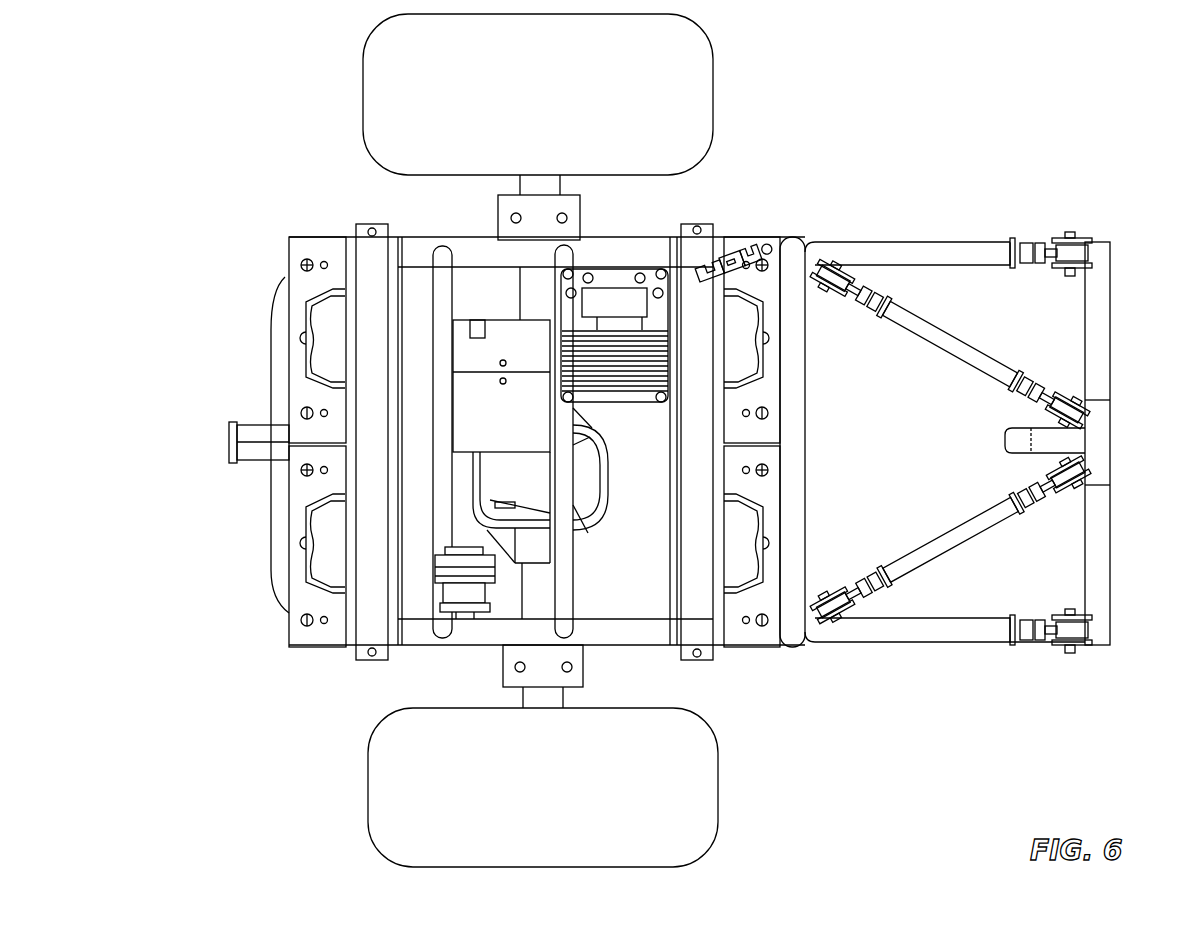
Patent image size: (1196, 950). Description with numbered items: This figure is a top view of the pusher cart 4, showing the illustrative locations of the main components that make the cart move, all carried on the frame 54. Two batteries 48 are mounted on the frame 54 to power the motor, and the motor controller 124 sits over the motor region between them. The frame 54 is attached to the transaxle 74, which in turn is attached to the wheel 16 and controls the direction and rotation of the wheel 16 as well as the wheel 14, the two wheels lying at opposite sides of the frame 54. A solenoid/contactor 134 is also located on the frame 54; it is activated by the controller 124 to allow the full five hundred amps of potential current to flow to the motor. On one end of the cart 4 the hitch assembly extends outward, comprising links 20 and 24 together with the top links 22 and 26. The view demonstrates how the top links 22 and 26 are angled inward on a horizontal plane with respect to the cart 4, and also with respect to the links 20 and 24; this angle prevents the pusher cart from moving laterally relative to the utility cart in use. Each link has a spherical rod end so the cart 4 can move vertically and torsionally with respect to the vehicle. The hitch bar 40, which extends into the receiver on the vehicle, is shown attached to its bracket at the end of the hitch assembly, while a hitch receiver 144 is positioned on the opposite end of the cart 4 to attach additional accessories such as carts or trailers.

The cart 4 is at (238, 136).
The wheel 14 is at (700, 790).
The wheel 16 is at (700, 95).
The link 20 is at (935, 645).
The top link 22 is at (960, 550).
The link 24 is at (945, 242).
The top link 26 is at (963, 336).
The hitch bar 40 is at (1070, 438).
The batteries 48 is at (297, 292).
The frame 54 is at (280, 535).
The transaxle 74 is at (585, 500).
The motor controller 124 is at (615, 270).
The solenoid/contactor 134 is at (470, 580).
The hitch receiver 144 is at (228, 432).